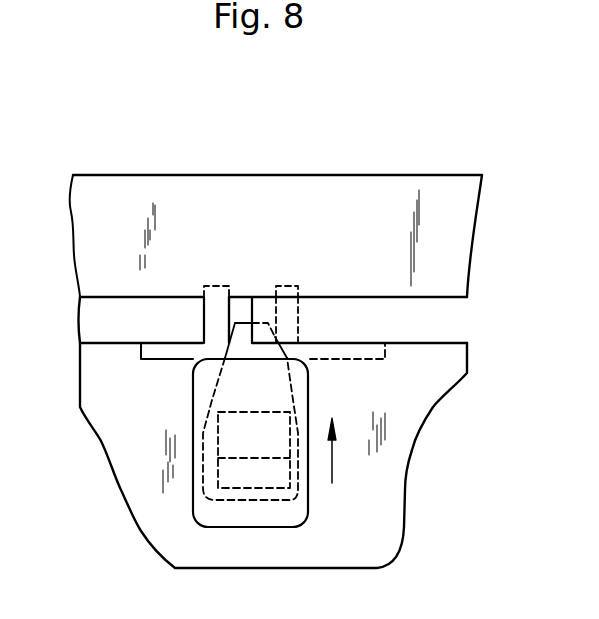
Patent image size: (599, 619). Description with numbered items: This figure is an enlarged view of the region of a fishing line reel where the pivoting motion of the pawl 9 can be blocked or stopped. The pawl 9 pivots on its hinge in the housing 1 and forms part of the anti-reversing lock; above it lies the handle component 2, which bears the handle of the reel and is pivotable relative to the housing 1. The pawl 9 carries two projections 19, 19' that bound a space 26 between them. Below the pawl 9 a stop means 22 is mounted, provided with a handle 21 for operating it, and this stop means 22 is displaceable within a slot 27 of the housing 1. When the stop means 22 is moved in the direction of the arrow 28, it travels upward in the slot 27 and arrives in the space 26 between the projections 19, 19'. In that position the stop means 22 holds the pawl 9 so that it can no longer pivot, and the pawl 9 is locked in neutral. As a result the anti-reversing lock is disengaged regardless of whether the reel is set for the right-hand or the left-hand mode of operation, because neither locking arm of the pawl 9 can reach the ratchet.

The housing 1 is at (437, 380).
The handle component 2 is at (455, 257).
The pawl 9 is at (153, 354).
The projection 19 is at (216, 284).
The projection 19' is at (292, 276).
The handle 21 is at (210, 389).
The stop means 22 is at (277, 384).
The space 26 is at (243, 310).
The slot 27 is at (232, 476).
The arrow 28 is at (332, 465).